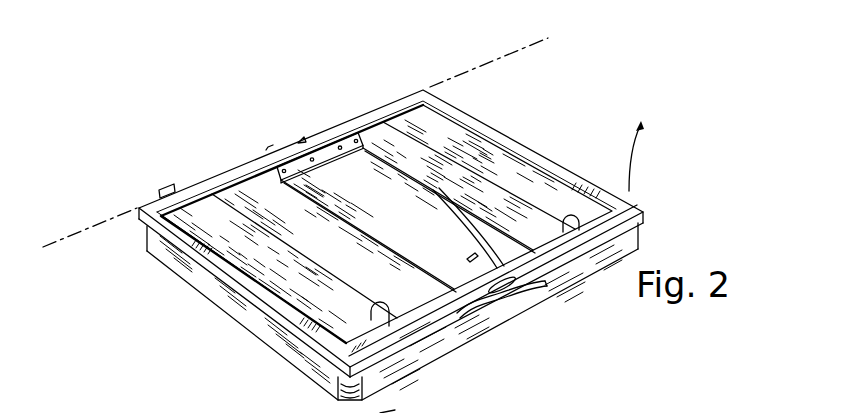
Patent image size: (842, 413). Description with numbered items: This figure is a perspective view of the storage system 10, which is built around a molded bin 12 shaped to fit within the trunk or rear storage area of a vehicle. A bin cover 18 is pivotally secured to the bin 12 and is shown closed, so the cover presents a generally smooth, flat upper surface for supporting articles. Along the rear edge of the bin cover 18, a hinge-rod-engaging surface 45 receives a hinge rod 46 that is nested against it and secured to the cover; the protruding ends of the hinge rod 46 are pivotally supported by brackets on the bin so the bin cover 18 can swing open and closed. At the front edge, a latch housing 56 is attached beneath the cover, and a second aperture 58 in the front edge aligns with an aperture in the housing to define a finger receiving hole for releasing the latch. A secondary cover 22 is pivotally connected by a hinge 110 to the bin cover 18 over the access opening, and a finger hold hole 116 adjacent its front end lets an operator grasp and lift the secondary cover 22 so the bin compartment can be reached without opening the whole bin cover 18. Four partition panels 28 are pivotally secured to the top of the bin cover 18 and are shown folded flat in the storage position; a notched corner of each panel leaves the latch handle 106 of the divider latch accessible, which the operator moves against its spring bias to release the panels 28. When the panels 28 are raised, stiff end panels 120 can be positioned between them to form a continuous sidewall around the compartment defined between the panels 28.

The storage system 10 is at (647, 27).
The molded bin 12 is at (287, 357).
The bin cover 18 is at (240, 300).
The secondary cover 22 is at (392, 215).
The partition panels 28 is at (496, 166).
The hinge-rod-engaging surface 45 is at (220, 175).
The hinge rod 46 is at (167, 191).
The latch housing 56 is at (505, 305).
The second aperture 58 is at (507, 290).
The latch handle 106 is at (570, 222).
The hinge 110 is at (323, 157).
The finger hold hole 116 is at (471, 254).
The end panels 120 is at (395, 410).